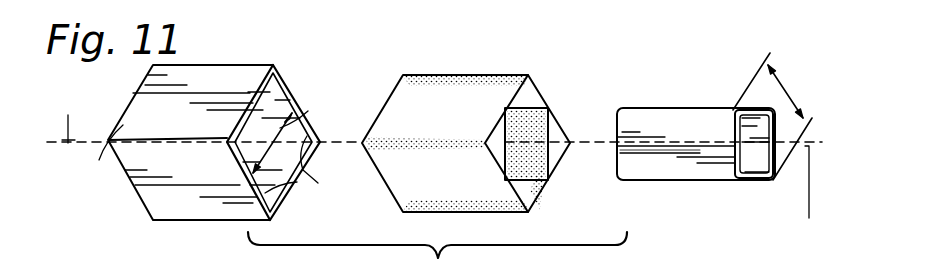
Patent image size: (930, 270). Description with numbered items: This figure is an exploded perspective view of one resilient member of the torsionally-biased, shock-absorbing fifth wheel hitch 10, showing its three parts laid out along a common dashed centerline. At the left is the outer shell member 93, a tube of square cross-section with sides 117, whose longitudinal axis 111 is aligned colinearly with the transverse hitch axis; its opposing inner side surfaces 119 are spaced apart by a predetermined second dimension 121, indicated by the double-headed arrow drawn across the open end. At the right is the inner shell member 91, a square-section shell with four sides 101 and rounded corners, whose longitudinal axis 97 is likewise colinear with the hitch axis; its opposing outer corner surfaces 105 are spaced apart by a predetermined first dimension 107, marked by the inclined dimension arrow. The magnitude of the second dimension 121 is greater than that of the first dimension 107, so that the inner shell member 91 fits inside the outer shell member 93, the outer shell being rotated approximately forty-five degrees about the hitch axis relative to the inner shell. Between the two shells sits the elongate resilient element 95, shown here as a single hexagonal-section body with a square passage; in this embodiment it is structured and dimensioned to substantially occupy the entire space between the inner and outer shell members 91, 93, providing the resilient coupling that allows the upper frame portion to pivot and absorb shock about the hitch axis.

The fastener assembly 10 is at (748, 50).
The inner shell member 91 is at (657, 110).
The outer shell member 93 is at (197, 222).
The elongate resilient element 95 is at (473, 77).
The longitudinal axis 97 is at (789, 197).
The sides 101 is at (697, 182).
The outer corner surfaces 105 is at (775, 193).
The predetermined first dimension 107 is at (785, 86).
The longitudinal axis 111 is at (80, 115).
The sides 117 is at (122, 158).
The inner side surfaces 119 is at (297, 182).
The predetermined second dimension 121 is at (308, 111).